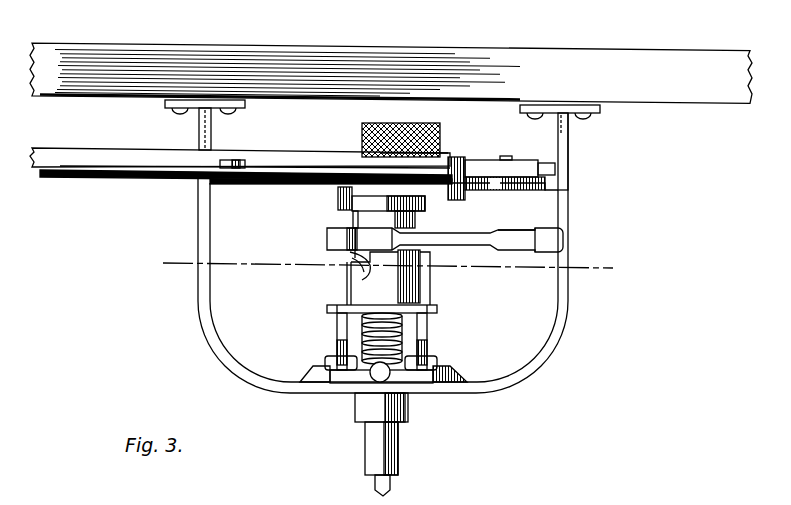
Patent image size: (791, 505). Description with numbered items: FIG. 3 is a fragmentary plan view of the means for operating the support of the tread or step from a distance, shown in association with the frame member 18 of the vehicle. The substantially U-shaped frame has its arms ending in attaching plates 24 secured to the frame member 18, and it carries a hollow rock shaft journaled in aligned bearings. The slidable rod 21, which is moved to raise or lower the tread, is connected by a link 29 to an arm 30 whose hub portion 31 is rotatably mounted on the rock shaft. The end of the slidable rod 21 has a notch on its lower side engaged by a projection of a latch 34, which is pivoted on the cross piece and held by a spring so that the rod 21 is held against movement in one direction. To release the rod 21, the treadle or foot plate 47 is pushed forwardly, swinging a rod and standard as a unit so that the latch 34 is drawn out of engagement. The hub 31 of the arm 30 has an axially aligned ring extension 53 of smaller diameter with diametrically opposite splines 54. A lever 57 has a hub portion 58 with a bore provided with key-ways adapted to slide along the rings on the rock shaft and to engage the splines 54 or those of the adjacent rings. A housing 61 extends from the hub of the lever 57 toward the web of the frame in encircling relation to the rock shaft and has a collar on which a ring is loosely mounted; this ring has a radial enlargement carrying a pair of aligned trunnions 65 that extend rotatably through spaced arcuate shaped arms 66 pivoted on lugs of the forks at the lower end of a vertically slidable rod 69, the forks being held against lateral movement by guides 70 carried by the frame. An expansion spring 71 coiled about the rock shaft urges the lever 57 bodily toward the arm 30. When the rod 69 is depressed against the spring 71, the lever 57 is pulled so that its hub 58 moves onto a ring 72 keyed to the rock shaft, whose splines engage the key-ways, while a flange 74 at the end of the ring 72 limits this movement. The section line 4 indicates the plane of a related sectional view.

The frame member 18 is at (447, 54).
The attaching plate 24 is at (222, 110).
The slidable rod 21 is at (156, 180).
The link 29 is at (296, 166).
The treadle or foot plate 47 is at (441, 140).
The arm 30 is at (438, 195).
The latch 34 is at (497, 167).
The hub portion 31 is at (338, 192).
The spline 54 is at (353, 219).
The ring extension 53 is at (416, 219).
The hub portion 58 is at (327, 238).
The lever 57 is at (477, 252).
The section line 4 is at (389, 264).
The housing 61 is at (421, 272).
The ring 72 is at (356, 258).
The flange 74 is at (362, 272).
The trunnion 65 is at (428, 310).
The arcuate shaped arm 66 is at (337, 318).
The expansion spring 71 is at (405, 335).
The guide 70 is at (313, 376).
The rod 69 is at (375, 380).